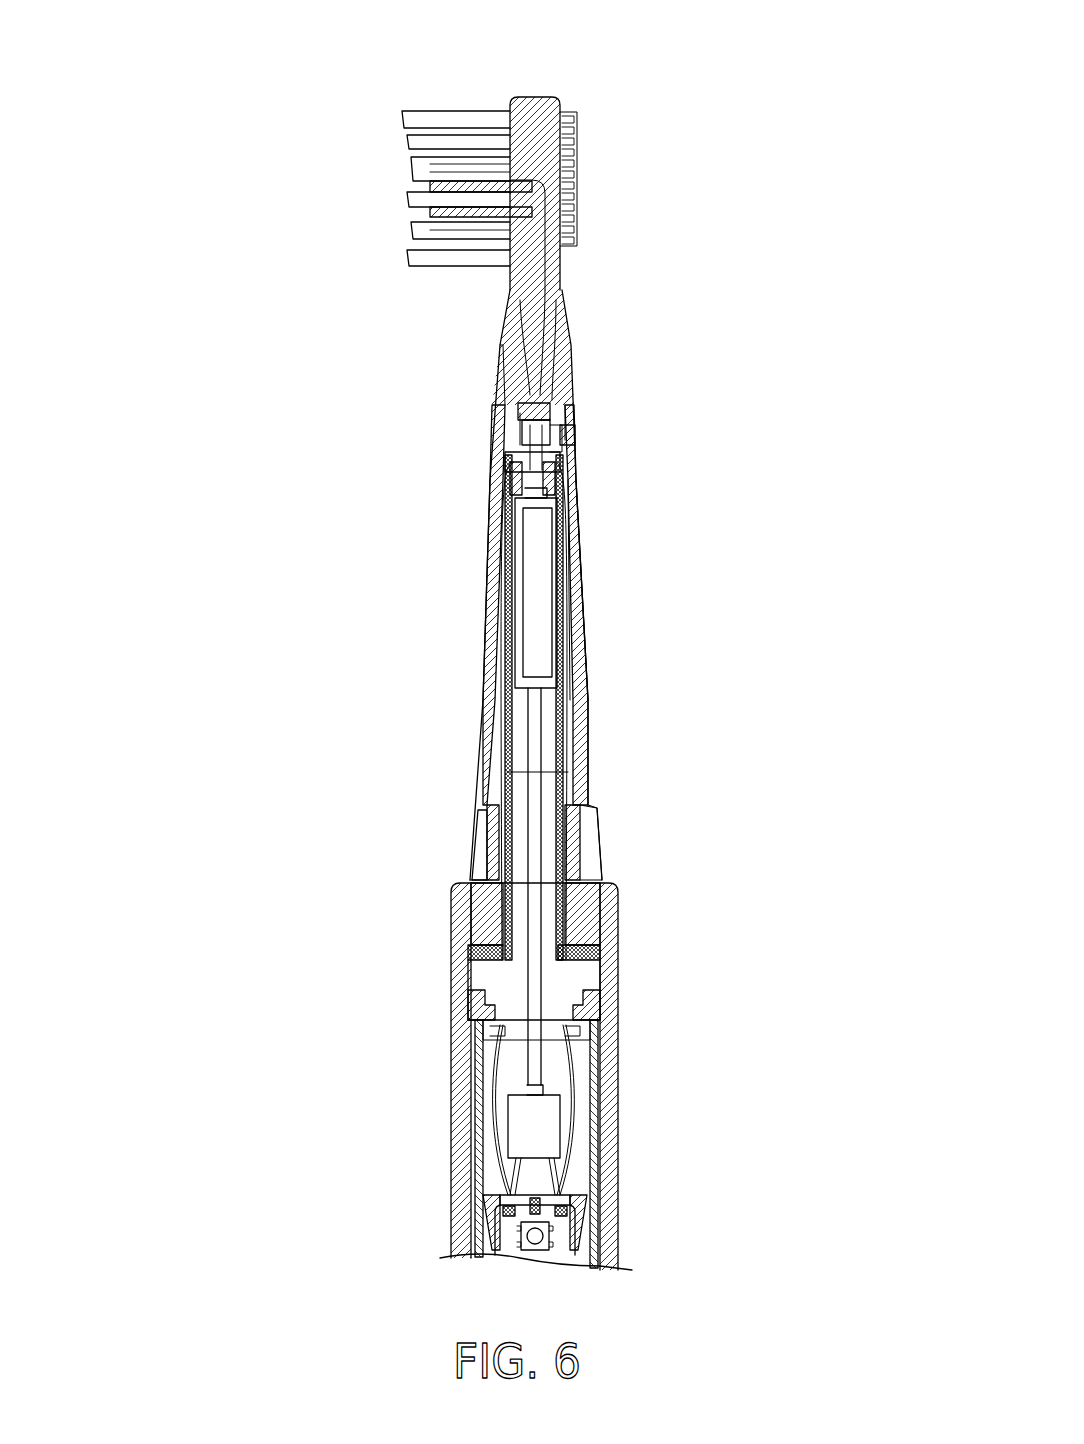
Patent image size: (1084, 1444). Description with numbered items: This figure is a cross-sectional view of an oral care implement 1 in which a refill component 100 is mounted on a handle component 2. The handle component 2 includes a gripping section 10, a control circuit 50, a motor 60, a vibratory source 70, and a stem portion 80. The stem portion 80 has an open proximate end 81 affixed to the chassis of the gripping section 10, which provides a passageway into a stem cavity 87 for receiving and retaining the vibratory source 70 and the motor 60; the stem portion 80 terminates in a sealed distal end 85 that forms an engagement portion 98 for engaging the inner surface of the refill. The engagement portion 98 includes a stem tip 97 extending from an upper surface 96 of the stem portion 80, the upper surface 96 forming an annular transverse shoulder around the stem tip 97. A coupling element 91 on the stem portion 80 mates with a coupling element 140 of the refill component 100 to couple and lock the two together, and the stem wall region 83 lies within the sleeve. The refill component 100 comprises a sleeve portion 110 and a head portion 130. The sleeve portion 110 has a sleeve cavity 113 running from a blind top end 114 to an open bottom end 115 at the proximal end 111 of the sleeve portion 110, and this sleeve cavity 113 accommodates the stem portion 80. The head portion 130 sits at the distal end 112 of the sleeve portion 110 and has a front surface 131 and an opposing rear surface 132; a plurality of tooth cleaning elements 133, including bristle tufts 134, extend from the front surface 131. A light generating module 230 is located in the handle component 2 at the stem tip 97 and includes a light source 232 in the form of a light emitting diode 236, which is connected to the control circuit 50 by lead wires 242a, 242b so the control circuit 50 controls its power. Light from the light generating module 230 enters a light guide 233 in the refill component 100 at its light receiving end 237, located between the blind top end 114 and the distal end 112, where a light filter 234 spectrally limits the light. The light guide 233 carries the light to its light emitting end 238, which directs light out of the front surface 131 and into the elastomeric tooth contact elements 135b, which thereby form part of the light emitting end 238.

The oral care implement 1 is at (748, 240).
The handle component 2 is at (437, 962).
The gripping section 10 is at (610, 1100).
The control circuit 50 is at (558, 1255).
The motor 60 is at (556, 1150).
The vibratory source 70 is at (527, 620).
The stem portion 80 is at (505, 548).
The open proximate end 81 is at (548, 958).
The outer sleeve 83 is at (568, 662).
The sealed distal end 85 is at (522, 424).
The stem cavity 87 is at (560, 528).
The coupling element 91 is at (596, 878).
The upper surface 96 is at (577, 453).
The stem tip 97 is at (525, 455).
The engagement portion 98 is at (565, 432).
The refill component 100 is at (566, 126).
The sleeve portion 110 is at (575, 590).
The proximal end 111 is at (477, 845).
The distal end 112 is at (503, 343).
The sleeve cavity 113 is at (574, 722).
The blind top end 114 is at (524, 413).
The open bottom end 115 is at (483, 876).
The head portion 130 is at (545, 120).
The front surface 131 is at (405, 142).
The rear surface 132 is at (566, 165).
The tooth cleaning elements 133 is at (399, 100).
The bristle tufts 134 is at (413, 170).
The elastomeric tooth contact elements 135b is at (420, 214).
The coupling element 140 is at (592, 842).
The light generating module 230 is at (574, 424).
The light source 232 is at (564, 402).
The light guide 233 is at (541, 312).
The light filter 234 is at (528, 372).
The light emitting diode 236 is at (535, 405).
The light receiving end 237 is at (556, 386).
The light emitting end 238 is at (504, 188).
The lead wire 242a is at (497, 775).
The lead wire 242b is at (572, 790).